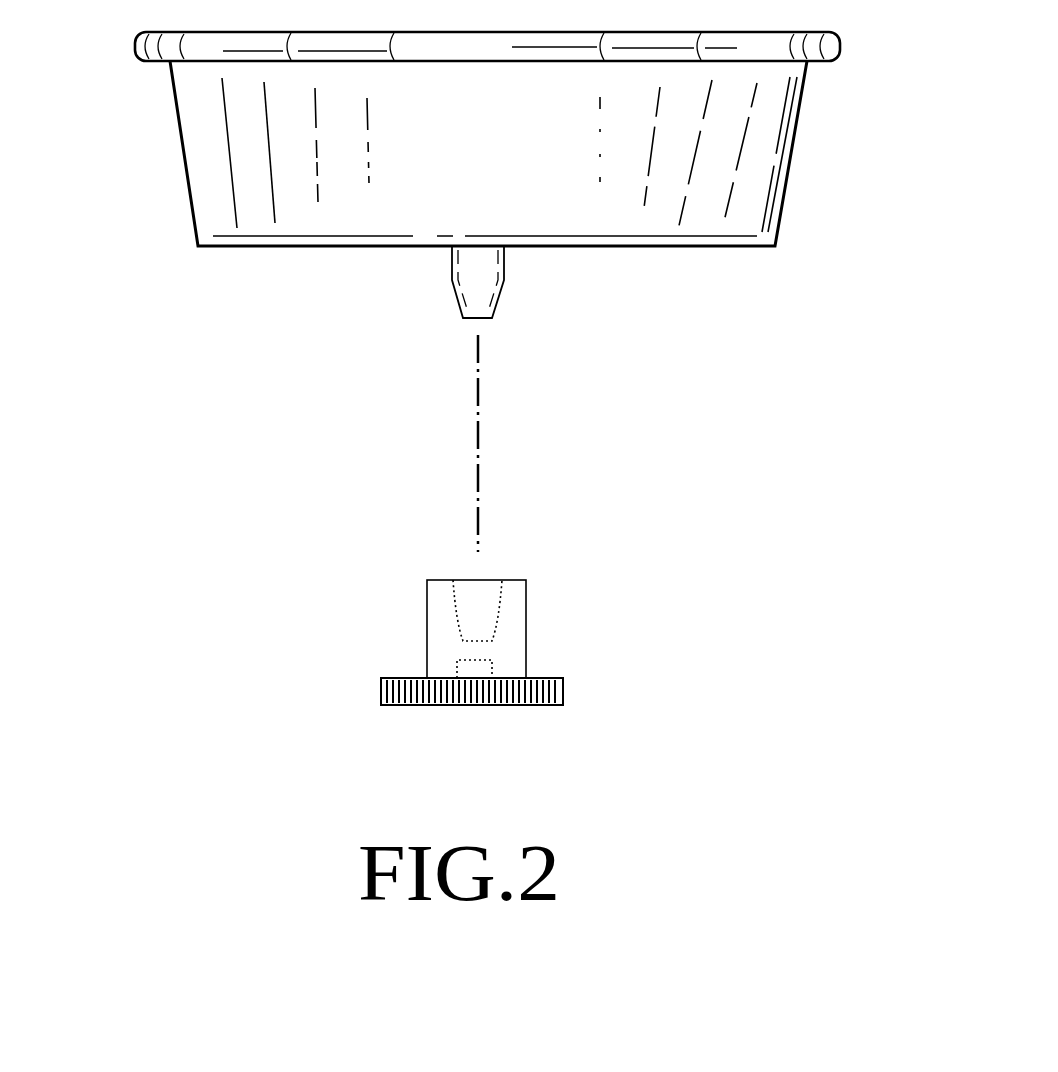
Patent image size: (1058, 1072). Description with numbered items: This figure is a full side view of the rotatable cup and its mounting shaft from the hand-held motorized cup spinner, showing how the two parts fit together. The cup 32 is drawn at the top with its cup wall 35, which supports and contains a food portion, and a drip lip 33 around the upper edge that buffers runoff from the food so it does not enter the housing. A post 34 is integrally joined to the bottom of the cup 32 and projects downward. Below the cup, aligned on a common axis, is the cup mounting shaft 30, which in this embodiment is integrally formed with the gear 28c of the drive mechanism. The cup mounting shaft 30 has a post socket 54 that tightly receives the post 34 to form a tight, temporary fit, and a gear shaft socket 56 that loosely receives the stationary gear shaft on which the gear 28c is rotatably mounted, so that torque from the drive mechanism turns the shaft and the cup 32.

The gear 28c is at (546, 693).
The cup mounting shaft 30 is at (495, 614).
The cup 32 is at (750, 138).
The drip lip 33 is at (833, 40).
The post 34 is at (485, 278).
The cup wall 35 is at (180, 145).
The post socket 54 is at (458, 592).
The gear shaft socket 56 is at (460, 667).